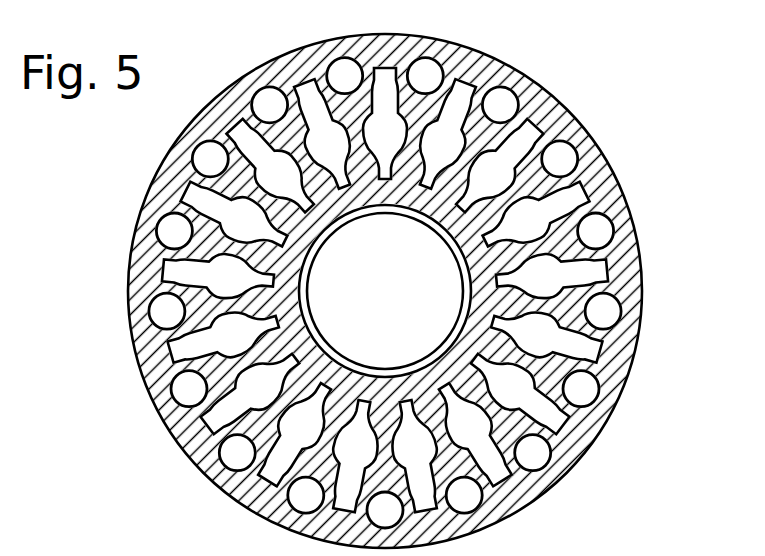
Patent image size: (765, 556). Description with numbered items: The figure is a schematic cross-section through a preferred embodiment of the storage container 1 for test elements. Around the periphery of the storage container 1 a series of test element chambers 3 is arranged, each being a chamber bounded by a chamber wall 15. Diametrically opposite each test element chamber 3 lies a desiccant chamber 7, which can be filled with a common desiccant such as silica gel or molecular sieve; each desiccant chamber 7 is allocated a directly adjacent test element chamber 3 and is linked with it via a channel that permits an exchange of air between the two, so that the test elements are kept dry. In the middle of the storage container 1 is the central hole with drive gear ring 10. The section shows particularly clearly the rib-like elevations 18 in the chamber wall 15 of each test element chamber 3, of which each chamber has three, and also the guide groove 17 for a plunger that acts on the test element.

The storage container 1 is at (590, 107).
The test element chamber 3 is at (586, 264).
The desiccant chamber 7 is at (567, 157).
The central hole with drive gear ring 10 is at (425, 325).
The chamber wall of the test element chamber 15 is at (250, 442).
The guide groove for plunger 17 is at (552, 411).
The rib-like elevation in the chamber wall 18 is at (166, 271).